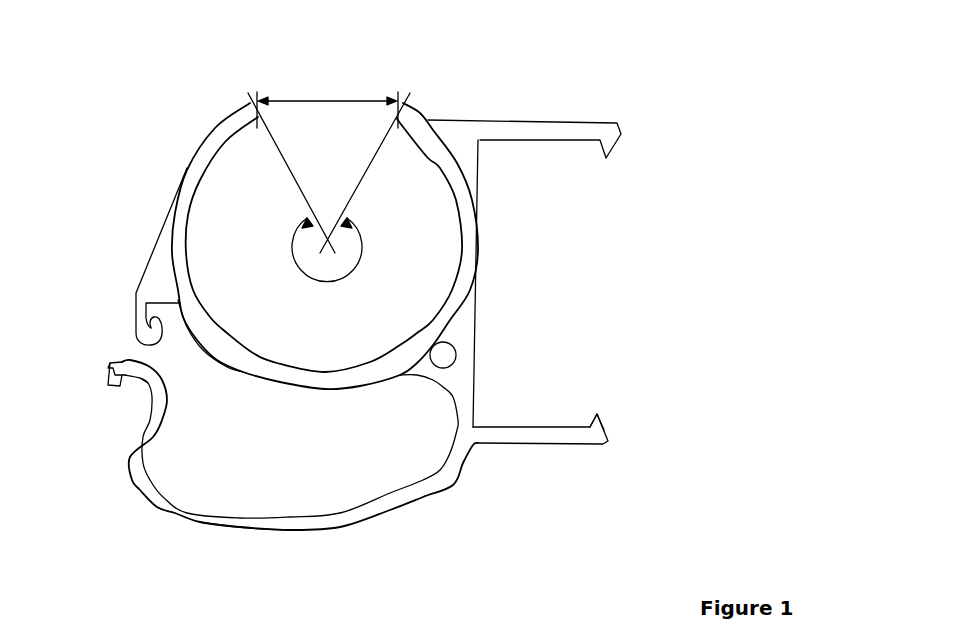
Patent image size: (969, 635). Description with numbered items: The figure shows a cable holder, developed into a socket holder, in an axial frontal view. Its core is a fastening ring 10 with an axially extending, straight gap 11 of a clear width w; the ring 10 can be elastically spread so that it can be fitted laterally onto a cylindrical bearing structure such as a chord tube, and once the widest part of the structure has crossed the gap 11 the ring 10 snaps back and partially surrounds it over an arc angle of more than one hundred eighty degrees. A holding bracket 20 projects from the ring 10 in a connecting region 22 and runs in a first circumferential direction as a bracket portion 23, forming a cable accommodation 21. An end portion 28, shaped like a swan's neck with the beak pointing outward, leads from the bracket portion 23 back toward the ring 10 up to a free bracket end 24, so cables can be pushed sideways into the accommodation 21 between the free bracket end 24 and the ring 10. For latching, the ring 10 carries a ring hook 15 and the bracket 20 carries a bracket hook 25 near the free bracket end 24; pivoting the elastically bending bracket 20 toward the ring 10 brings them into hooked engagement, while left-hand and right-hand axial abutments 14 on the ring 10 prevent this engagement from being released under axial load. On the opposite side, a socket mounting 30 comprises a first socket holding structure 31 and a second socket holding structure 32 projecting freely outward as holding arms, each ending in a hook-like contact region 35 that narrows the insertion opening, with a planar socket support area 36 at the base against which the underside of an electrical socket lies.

The fastening ring 10 is at (193, 165).
The gap 11 is at (339, 78).
The axial abutment 14 is at (200, 338).
The ring hook 15 is at (140, 330).
The holding bracket 20 is at (115, 502).
The cable accommodation 21 is at (291, 447).
The connecting region 22 is at (455, 378).
The bracket portion 23 is at (241, 523).
The free bracket end 24 is at (102, 379).
The bracket hook 25 is at (114, 365).
The end portion 28 is at (148, 387).
The socket mounting 30 is at (570, 289).
The first socket holding structure 31 is at (541, 130).
The second socket holding structure 32 is at (572, 442).
The contact region 35 is at (600, 418).
The socket support area 36 is at (476, 333).